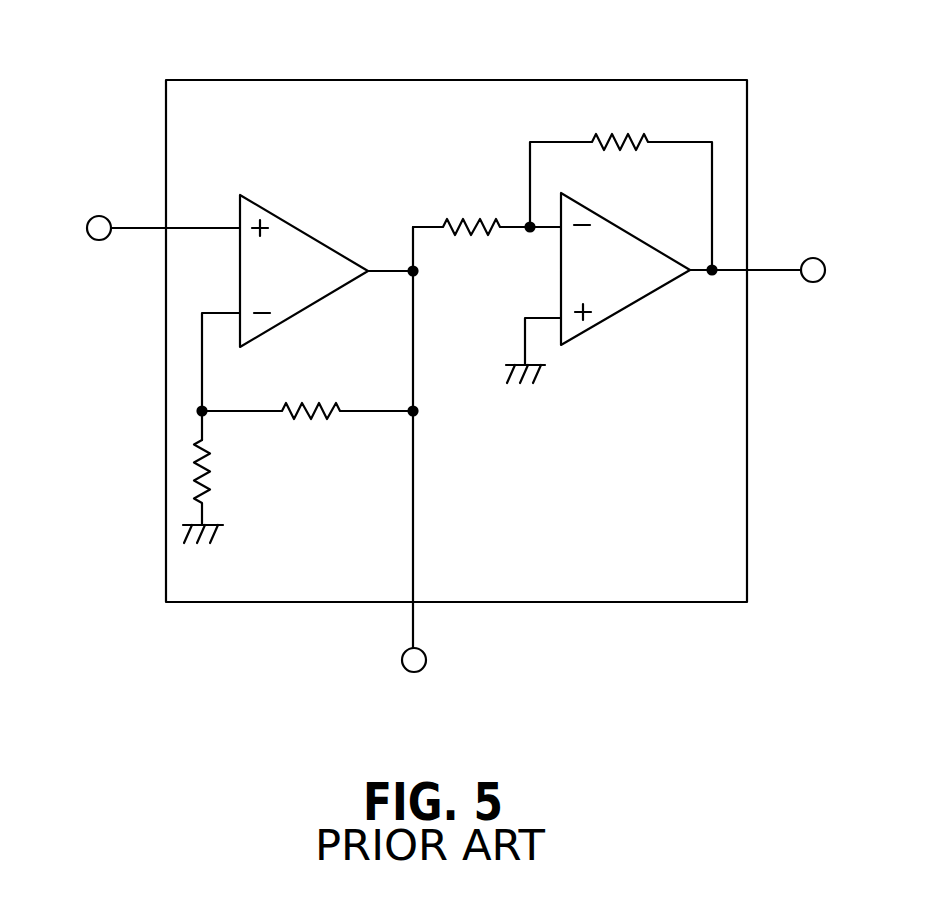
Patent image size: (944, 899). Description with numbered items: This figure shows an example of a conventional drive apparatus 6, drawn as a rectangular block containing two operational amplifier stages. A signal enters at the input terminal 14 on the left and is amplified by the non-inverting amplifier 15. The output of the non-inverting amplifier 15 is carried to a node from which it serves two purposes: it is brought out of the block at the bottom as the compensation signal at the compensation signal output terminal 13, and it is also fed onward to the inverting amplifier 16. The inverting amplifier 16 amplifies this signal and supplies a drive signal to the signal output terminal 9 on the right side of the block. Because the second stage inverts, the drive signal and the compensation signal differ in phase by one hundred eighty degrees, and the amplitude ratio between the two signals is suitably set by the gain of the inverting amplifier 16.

The drive apparatus 6 is at (453, 80).
The input terminal 14 is at (100, 216).
The non-inverting amplifier 15 is at (312, 233).
The inverting amplifier 16 is at (627, 307).
The signal output terminal 9 is at (818, 258).
The compensation signal output terminal 13 is at (426, 657).